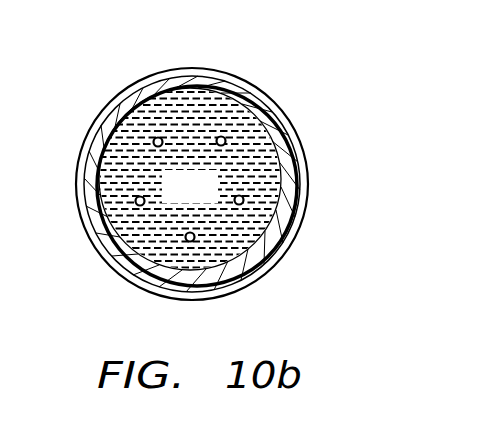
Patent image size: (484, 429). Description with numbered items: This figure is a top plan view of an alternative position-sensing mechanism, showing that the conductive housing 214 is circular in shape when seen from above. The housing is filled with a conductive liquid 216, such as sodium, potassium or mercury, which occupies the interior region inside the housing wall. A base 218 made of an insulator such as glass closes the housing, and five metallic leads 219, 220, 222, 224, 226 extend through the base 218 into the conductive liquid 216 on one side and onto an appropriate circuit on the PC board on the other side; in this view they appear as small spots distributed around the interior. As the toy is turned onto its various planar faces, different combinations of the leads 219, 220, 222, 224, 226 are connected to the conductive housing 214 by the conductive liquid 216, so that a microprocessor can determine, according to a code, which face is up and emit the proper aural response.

The conductive housing 214 is at (90, 155).
The conductive liquid 216 is at (211, 199).
The base 218 is at (188, 112).
The metallic lead 219 is at (155, 139).
The metallic lead 220 is at (222, 137).
The metallic lead 222 is at (243, 200).
The metallic lead 224 is at (191, 242).
The metallic lead 226 is at (136, 202).